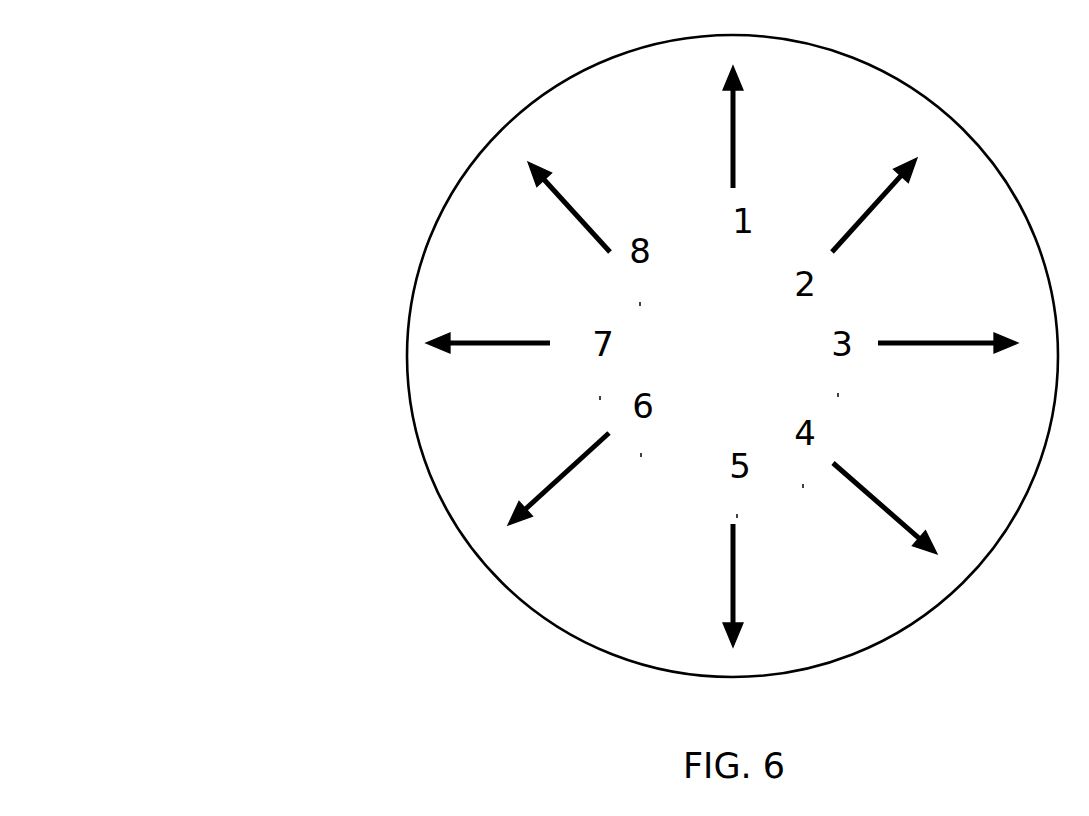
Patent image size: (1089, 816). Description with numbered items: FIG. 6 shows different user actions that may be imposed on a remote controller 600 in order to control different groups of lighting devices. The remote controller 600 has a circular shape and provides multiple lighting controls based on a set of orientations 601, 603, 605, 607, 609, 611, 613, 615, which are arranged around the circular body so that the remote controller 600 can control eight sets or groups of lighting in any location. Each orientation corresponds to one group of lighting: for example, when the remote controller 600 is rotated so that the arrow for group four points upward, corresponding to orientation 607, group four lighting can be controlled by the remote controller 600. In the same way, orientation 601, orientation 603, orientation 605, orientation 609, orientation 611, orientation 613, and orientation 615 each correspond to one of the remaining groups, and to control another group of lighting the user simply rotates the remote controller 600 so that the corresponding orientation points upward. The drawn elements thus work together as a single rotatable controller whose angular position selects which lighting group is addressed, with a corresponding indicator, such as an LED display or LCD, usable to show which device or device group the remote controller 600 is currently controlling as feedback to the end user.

The remote controller 600 is at (222, 747).
The orientation 601 is at (722, 157).
The orientation 603 is at (868, 203).
The orientation 605 is at (917, 338).
The orientation 607 is at (858, 478).
The orientation 609 is at (733, 597).
The orientation 611 is at (538, 502).
The orientation 613 is at (503, 348).
The orientation 615 is at (580, 228).